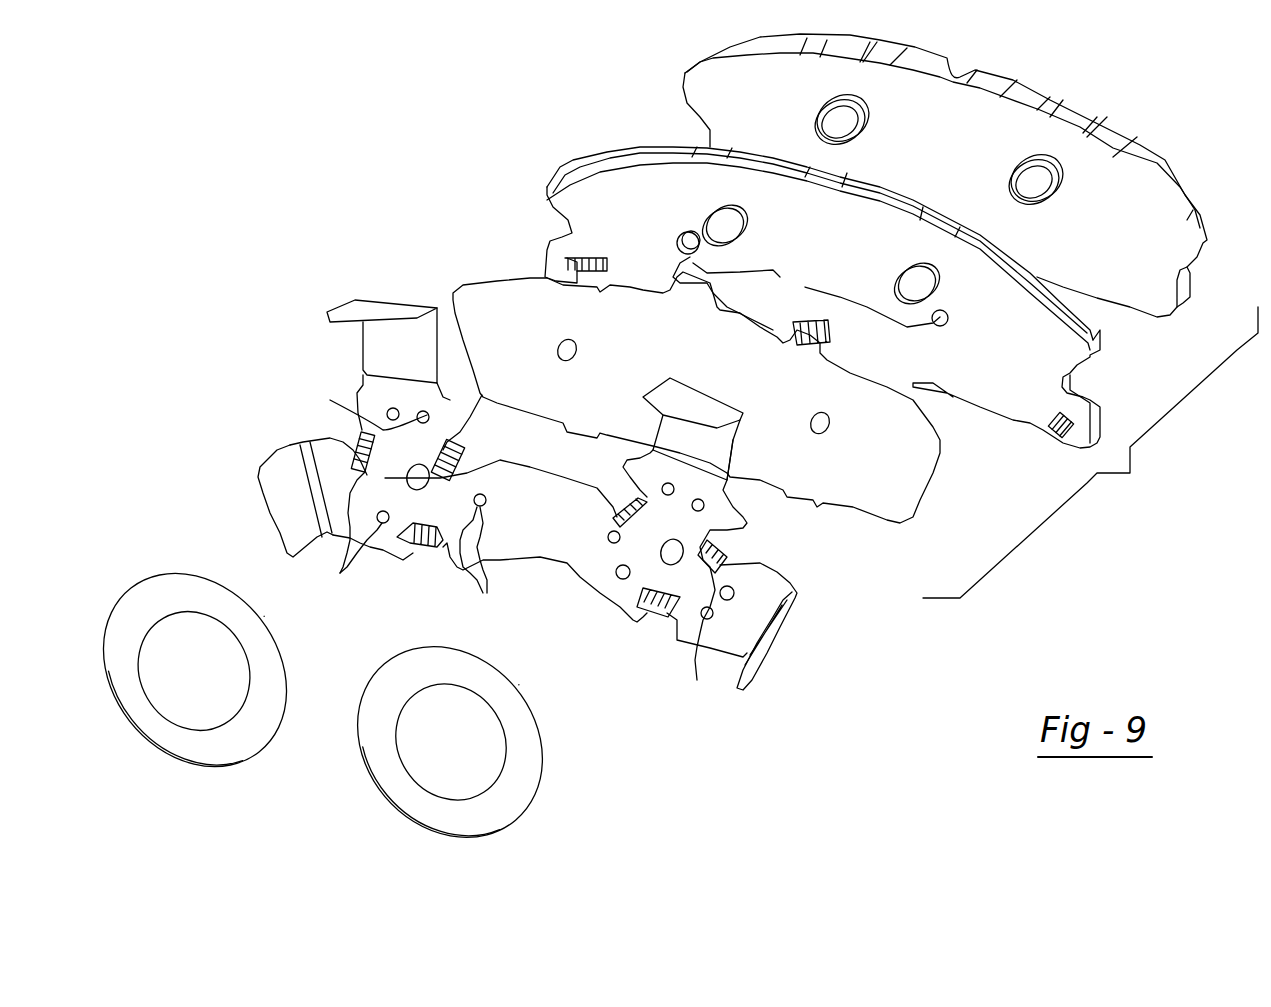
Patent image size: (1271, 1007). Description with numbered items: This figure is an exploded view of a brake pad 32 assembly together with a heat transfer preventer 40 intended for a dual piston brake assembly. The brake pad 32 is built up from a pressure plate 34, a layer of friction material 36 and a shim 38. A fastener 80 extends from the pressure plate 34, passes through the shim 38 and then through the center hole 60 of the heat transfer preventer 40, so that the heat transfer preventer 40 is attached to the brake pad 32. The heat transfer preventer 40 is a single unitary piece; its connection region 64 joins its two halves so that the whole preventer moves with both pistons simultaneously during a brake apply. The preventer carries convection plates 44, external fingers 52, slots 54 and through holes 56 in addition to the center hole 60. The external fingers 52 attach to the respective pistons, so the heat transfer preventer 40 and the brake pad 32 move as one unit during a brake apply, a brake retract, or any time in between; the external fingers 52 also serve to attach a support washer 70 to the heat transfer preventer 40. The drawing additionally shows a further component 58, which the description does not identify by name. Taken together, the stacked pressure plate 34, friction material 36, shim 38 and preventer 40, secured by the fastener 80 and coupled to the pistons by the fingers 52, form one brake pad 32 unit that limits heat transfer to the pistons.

The brake pad 32 is at (1090, 452).
The pressure plate 34 is at (553, 190).
The friction material 36 is at (690, 80).
The shim 38 is at (430, 287).
The heat transfer preventer 40 is at (343, 350).
The convection plates 44 is at (240, 472).
The external fingers 52 is at (613, 517).
The slots 54 is at (740, 533).
The through holes 56 is at (404, 545).
The spring 58 is at (390, 413).
The center hole 60 is at (360, 480).
The connection region 64 is at (567, 563).
The support washer 70 is at (403, 788).
The fastener 80 is at (816, 295).